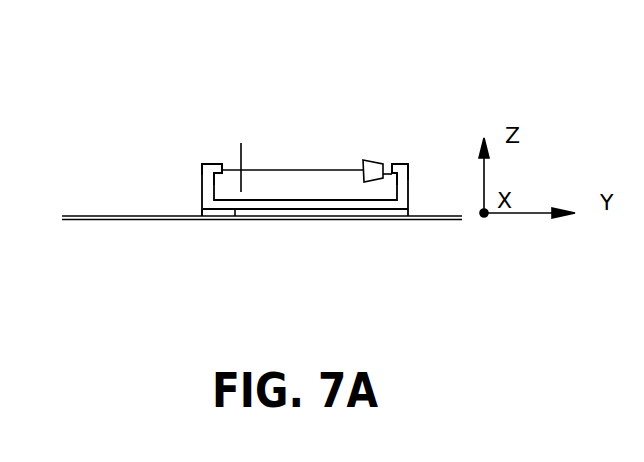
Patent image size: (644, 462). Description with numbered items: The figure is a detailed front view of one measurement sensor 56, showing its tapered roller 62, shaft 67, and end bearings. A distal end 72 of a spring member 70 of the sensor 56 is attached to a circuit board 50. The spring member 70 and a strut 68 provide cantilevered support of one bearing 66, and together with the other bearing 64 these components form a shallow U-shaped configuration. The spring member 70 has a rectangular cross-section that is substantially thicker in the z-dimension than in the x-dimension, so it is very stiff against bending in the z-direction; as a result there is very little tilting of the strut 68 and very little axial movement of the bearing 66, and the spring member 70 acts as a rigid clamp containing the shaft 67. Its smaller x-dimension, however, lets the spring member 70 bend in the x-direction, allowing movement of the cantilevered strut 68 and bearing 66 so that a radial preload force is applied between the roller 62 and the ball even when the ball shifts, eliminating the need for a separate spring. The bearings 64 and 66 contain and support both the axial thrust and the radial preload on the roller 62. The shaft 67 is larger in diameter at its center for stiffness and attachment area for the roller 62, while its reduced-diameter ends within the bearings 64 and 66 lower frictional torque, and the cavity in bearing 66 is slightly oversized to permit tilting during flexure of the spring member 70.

The circuit board 50 is at (97, 215).
The sensor 56 is at (228, 243).
The tapered roller 62 is at (372, 165).
The bearing 64 is at (210, 163).
The bearing 66 is at (402, 166).
The shaft 67 is at (290, 168).
The strut 68 is at (400, 192).
The spring member 70 is at (305, 207).
The distal end 72 is at (201, 216).